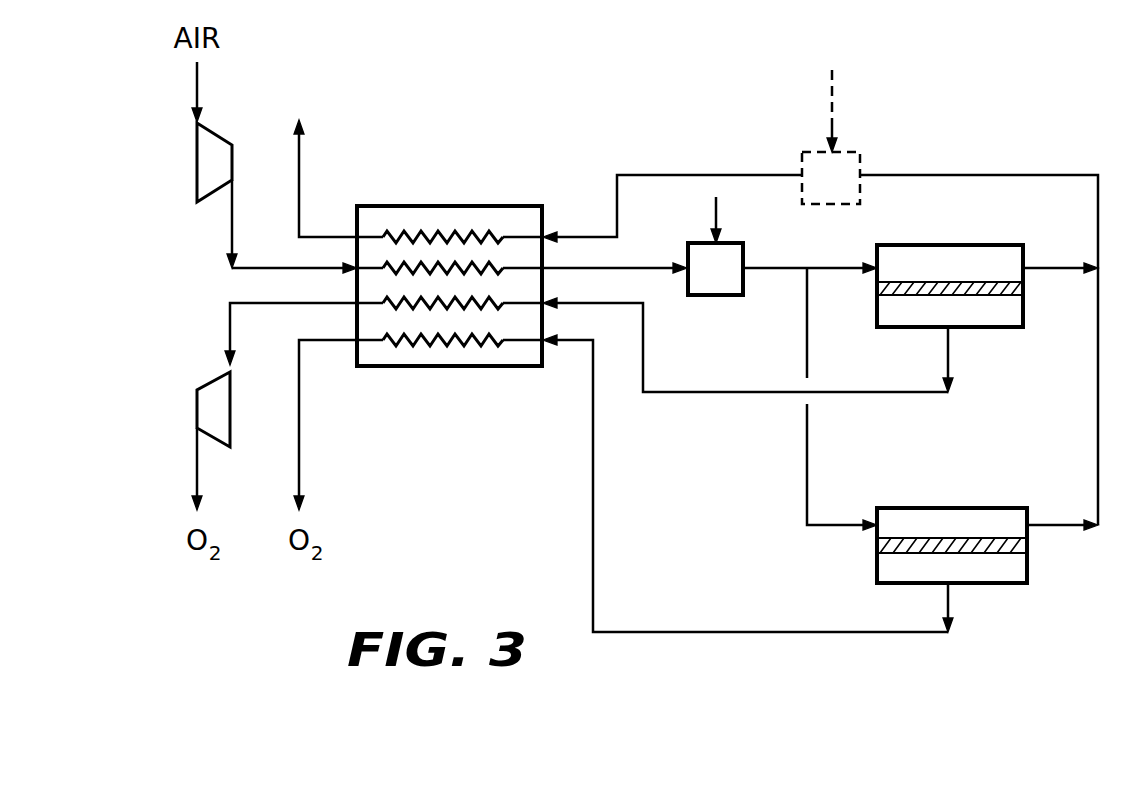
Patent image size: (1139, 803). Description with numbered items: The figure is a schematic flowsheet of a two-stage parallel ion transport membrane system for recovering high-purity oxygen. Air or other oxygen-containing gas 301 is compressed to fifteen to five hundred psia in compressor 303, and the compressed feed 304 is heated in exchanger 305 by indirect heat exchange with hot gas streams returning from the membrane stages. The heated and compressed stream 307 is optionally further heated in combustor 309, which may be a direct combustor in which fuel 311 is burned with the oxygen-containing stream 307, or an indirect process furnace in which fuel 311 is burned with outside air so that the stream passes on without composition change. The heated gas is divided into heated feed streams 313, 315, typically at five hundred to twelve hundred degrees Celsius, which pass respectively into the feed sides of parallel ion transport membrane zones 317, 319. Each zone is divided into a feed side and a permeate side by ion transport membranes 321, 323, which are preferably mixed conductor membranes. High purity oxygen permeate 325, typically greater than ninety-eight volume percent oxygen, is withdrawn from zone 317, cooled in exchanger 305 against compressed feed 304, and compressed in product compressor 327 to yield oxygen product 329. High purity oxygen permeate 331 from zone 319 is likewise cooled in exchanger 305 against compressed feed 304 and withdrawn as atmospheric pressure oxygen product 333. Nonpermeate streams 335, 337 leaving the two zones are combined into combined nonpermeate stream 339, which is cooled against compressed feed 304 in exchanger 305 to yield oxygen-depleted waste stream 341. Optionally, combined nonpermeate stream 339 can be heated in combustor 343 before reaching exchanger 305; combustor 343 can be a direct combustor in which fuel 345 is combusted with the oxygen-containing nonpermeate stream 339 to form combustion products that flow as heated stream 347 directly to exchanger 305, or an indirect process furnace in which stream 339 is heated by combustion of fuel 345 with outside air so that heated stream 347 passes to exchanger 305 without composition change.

The oxygen-containing gas 301 is at (197, 78).
The compressor 303 is at (197, 147).
The compressed feed 304 is at (230, 217).
The exchanger 305 is at (452, 206).
The heated and compressed stream 307 is at (642, 270).
The combustor 309 is at (730, 296).
The fuel 311 is at (716, 205).
The heated feed stream 313 is at (833, 268).
The heated feed stream 315 is at (807, 455).
The ion transport membrane zone 317 is at (895, 245).
The ion transport membrane zone 319 is at (925, 508).
The ion transport membrane 321 is at (985, 290).
The ion transport membrane 323 is at (983, 553).
The high purity oxygen permeate 325 is at (845, 392).
The product compressor 327 is at (197, 420).
The oxygen product 329 is at (197, 467).
The high purity oxygen permeate 331 is at (673, 632).
The atmospheric pressure oxygen product 333 is at (299, 452).
The nonpermeate stream 335 is at (1050, 268).
The nonpermeate stream 337 is at (1052, 525).
The combined nonpermeate stream 339 is at (921, 175).
The oxygen-depleted waste stream 341 is at (299, 165).
The combustor 343 is at (805, 152).
The fuel 345 is at (832, 106).
The heated stream 347 is at (697, 175).